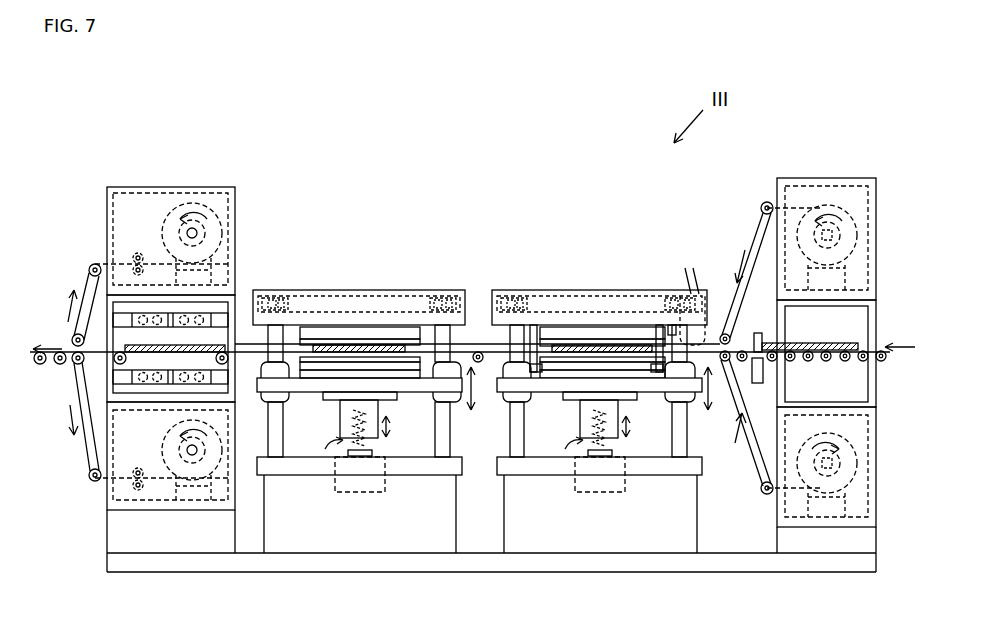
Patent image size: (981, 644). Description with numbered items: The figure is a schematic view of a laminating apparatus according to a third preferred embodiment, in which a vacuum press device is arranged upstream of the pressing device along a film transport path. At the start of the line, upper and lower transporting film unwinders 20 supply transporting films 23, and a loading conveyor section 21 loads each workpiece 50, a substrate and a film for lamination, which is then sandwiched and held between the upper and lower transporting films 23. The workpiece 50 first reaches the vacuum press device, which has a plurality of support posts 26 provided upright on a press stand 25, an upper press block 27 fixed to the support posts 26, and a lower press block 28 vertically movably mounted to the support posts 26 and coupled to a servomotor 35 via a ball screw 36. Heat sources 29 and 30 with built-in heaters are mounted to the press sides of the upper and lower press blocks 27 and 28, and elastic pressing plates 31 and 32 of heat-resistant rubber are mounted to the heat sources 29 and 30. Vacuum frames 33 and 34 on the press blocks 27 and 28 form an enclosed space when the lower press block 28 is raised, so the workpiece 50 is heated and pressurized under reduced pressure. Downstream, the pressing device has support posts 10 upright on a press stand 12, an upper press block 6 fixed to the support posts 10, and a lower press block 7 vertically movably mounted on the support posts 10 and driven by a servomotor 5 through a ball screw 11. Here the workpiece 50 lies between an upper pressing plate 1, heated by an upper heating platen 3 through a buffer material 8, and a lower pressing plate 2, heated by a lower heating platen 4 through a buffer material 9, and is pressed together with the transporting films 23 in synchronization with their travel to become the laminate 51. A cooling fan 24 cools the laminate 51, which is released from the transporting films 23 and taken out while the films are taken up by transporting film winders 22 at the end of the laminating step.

The upper pressing plate 1 is at (360, 421).
The lower pressing plate 2 is at (410, 360).
The upper heating platen 3 is at (342, 332).
The lower heating platen 4 is at (378, 374).
The servomotor 5 is at (365, 492).
The upper press block 6 is at (307, 298).
The lower press block 7 is at (295, 386).
The buffer material 8 is at (368, 344).
The buffer material 9 is at (393, 366).
The support posts 10 is at (276, 335).
The ball screw 11 is at (335, 444).
The press stand 12 is at (305, 470).
The transporting film unwinders 20 is at (837, 228).
The loading conveyor section 21 is at (826, 362).
The transporting film winders 22 is at (180, 232).
The transporting films 23 is at (91, 272).
The cooling fan 24 is at (150, 313).
The press stand 25 is at (545, 470).
The support posts 26 is at (516, 335).
The upper press block 27 is at (547, 298).
The lower press block 28 is at (534, 383).
The heat source 29 is at (596, 332).
The heat source 30 is at (625, 378).
The elastic pressing plate 31 is at (628, 341).
The elastic pressing plate 32 is at (660, 378).
The vacuum frame 33 is at (669, 335).
The vacuum frame 34 is at (657, 372).
The servomotor 35 is at (605, 492).
The ball screw 36 is at (582, 444).
The workpiece 50 is at (392, 350).
The laminate 51 is at (170, 345).